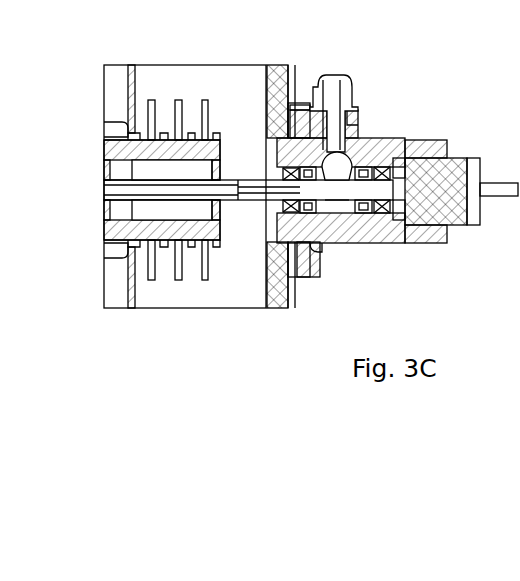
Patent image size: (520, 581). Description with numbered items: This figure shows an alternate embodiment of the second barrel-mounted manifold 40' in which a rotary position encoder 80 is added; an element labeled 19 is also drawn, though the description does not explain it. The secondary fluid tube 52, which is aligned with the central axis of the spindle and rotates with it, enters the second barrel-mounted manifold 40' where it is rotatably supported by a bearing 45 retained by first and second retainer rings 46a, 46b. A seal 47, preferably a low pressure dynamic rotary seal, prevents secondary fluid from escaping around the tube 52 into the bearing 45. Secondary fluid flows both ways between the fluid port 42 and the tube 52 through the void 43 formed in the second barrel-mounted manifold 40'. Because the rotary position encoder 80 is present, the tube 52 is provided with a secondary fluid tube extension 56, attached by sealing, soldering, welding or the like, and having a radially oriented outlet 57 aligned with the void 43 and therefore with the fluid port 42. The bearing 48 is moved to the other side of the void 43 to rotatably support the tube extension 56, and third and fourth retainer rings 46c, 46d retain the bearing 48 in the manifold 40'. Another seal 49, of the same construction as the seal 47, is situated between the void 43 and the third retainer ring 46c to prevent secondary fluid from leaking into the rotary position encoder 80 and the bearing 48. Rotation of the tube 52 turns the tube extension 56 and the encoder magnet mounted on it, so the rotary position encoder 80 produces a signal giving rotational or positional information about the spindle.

The secondary fluid tube 52 is at (168, 193).
The bearing 45 is at (278, 246).
The second barrel-mounted manifold 40' is at (359, 186).
The seal 47 is at (312, 213).
The nut 19 is at (306, 160).
The fluid port 42 is at (327, 74).
The void 43 is at (338, 172).
The first retainer ring 46a is at (281, 168).
The second retainer ring 46b is at (300, 167).
The third retainer ring 46c is at (370, 168).
The fourth retainer ring 46d is at (402, 165).
The secondary fluid tube extension 56 is at (333, 203).
The radially oriented outlet 57 is at (338, 200).
The seal 49 is at (360, 214).
The bearing 48 is at (378, 215).
The rotary position encoder 80 is at (452, 218).